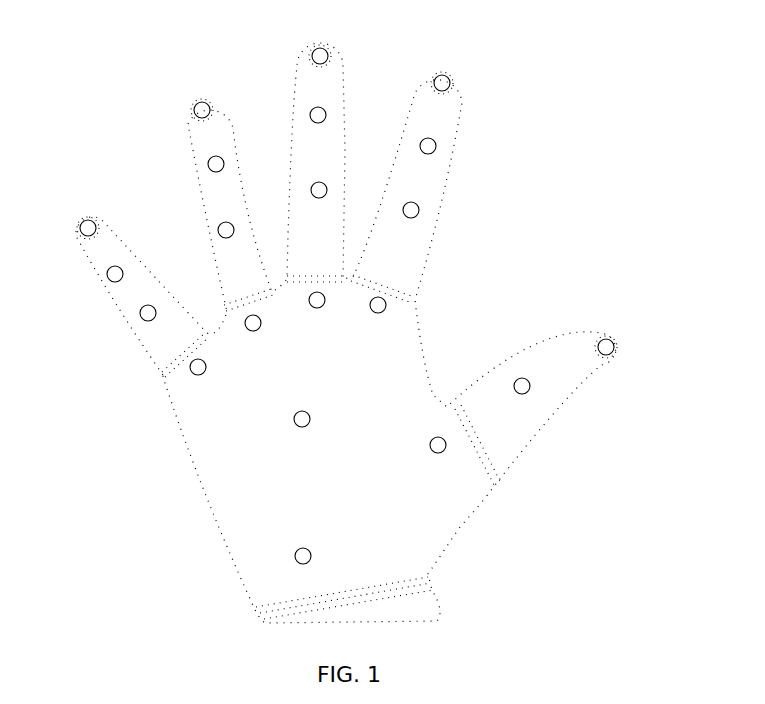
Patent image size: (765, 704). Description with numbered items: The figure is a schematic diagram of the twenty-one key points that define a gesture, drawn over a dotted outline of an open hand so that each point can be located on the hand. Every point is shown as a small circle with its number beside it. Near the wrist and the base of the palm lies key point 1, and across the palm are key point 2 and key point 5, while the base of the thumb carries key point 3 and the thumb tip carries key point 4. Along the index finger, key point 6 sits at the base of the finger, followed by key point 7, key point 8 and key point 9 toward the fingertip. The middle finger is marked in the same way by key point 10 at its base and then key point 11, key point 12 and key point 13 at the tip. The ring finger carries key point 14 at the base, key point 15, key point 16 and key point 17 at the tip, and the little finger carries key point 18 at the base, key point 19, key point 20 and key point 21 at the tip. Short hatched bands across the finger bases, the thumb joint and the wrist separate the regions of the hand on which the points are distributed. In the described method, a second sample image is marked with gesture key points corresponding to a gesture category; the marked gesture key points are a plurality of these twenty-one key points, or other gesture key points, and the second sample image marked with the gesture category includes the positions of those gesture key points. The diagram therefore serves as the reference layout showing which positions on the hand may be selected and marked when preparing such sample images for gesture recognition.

The gesture key point 1 is at (291, 557).
The gesture key point 2 is at (437, 463).
The gesture key point 3 is at (519, 403).
The gesture key point 4 is at (622, 341).
The gesture key point 5 is at (307, 432).
The gesture key point 6 is at (374, 329).
The gesture key point 7 is at (411, 225).
The gesture key point 8 is at (429, 162).
The gesture key point 9 is at (448, 68).
The gesture key point 10 is at (318, 320).
The gesture key point 11 is at (318, 208).
The gesture key point 12 is at (318, 136).
The gesture key point 13 is at (320, 43).
The gesture key point 14 is at (255, 342).
The gesture key point 15 is at (233, 249).
The gesture key point 16 is at (215, 182).
The gesture key point 17 is at (200, 95).
The gesture key point 18 is at (213, 381).
The gesture key point 19 is at (160, 329).
The gesture key point 20 is at (96, 291).
The gesture key point 21 is at (70, 224).